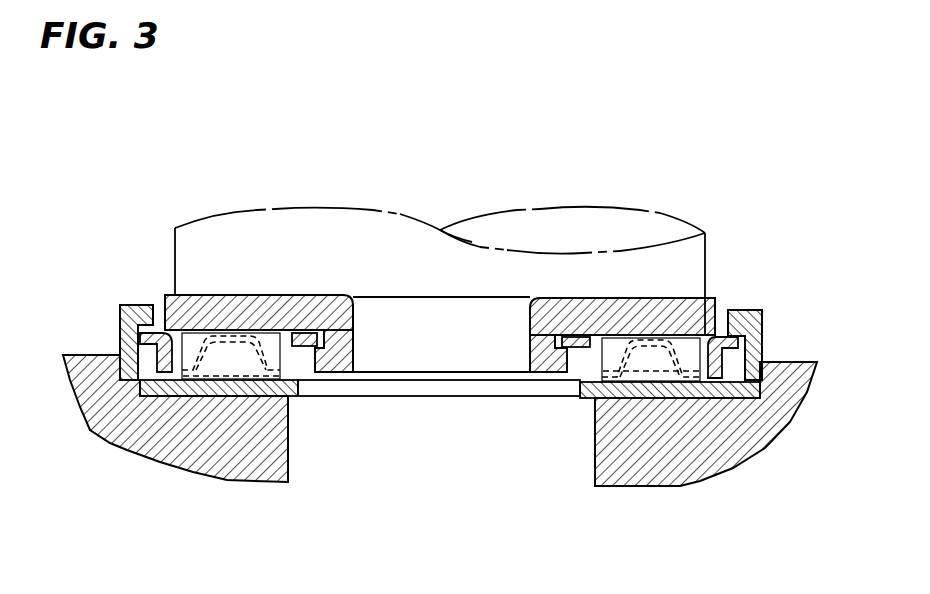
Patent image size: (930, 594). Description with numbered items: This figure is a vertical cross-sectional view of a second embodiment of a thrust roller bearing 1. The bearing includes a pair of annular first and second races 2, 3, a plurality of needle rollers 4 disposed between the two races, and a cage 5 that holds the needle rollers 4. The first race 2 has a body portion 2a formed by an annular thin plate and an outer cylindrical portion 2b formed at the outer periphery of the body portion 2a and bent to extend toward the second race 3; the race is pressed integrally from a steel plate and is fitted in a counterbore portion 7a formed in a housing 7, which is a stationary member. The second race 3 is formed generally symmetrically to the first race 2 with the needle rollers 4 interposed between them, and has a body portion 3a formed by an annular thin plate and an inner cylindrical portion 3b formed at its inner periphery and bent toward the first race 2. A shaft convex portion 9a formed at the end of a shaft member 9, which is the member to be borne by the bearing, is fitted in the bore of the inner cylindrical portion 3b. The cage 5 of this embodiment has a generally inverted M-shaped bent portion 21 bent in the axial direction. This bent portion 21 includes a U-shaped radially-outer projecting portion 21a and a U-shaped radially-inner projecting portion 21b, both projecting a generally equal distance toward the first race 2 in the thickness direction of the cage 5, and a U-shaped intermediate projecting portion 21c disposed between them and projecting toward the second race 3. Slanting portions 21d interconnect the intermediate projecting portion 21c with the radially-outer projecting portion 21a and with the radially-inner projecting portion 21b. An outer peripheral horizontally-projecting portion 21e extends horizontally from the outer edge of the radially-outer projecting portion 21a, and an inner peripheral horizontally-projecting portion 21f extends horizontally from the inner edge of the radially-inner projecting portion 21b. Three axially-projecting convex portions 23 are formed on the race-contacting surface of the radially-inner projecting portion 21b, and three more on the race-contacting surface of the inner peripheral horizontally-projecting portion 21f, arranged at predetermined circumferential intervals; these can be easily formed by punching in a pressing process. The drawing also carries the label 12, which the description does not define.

The thrust roller bearing 1 is at (456, 132).
The first race 2 is at (312, 397).
The body portion 2a is at (180, 397).
The outer cylindrical portion 2b is at (133, 305).
The second race 3 is at (275, 297).
The body portion 3a is at (207, 292).
The inner cylindrical portion 3b is at (350, 337).
The needle rollers 4 is at (258, 337).
The cage 5 is at (300, 333).
The housing 7 is at (620, 490).
The counterbore portion 7a is at (108, 447).
The shaft member 9 is at (417, 220).
The shaft convex portion 9a is at (420, 360).
The adhesive layer 12 is at (293, 397).
The generally inverted M-shaped bent portion 21 is at (635, 333).
The radially-outer projecting portion 21a is at (742, 425).
The radially-inner projecting portion 21b is at (570, 388).
The intermediate projecting portion 21c is at (687, 333).
The slanting portion 21d is at (650, 365).
The outer peripheral horizontally-projecting portion 21e is at (718, 337).
The inner peripheral horizontally-projecting portion 21f is at (570, 335).
The axially-projecting convex portions 23 is at (313, 345).